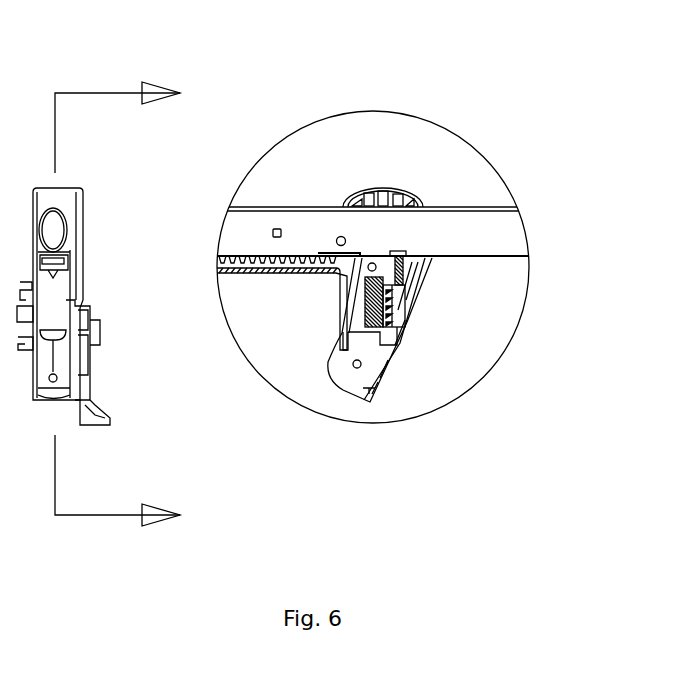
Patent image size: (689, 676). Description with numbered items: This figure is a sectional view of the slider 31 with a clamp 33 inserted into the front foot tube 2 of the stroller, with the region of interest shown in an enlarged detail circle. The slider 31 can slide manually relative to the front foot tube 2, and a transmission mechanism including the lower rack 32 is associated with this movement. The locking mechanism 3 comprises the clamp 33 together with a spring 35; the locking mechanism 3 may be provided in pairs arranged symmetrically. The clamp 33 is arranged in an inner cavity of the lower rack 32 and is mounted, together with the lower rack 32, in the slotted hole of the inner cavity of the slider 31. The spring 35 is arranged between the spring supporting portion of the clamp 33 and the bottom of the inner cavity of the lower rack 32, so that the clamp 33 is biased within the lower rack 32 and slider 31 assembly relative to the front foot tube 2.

The front foot tube 2 is at (488, 227).
The locking mechanism 3 is at (333, 116).
The slider 31 is at (386, 190).
The lower rack 32 is at (347, 287).
The clamp 33 is at (387, 300).
The spring 35 is at (348, 330).